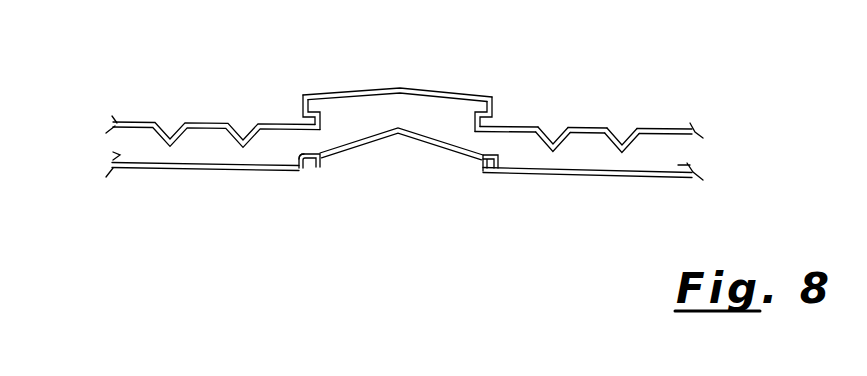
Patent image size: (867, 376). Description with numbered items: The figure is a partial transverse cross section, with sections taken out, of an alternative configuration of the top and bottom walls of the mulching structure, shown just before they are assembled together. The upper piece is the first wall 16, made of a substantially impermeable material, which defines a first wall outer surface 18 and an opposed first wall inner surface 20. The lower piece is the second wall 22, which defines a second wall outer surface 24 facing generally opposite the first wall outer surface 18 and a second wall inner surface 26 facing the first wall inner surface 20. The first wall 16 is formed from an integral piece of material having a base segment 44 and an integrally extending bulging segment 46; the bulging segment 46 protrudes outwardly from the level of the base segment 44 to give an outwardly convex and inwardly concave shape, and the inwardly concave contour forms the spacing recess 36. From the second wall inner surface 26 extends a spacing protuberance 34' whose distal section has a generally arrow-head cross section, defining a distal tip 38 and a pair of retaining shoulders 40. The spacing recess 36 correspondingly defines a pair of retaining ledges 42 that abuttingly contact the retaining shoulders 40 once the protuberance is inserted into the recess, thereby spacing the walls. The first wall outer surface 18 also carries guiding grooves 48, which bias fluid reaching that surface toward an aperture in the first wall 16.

The first wall 16 is at (421, 99).
The first wall outer surface 18 is at (200, 118).
The first wall inner surface 20 is at (200, 128).
The second wall 22 is at (580, 173).
The second wall outer surface 24 is at (427, 163).
The second wall inner surface 26 is at (633, 165).
The spacing protuberance 34' is at (252, 180).
The spacing recess 36 is at (395, 88).
The distal tip 38 is at (397, 126).
The retaining shoulders 40 is at (298, 156).
The retaining ledges 42 is at (310, 108).
The base segment 44 is at (606, 108).
The bulging segment 46 is at (415, 88).
The guiding groove 48 is at (558, 127).